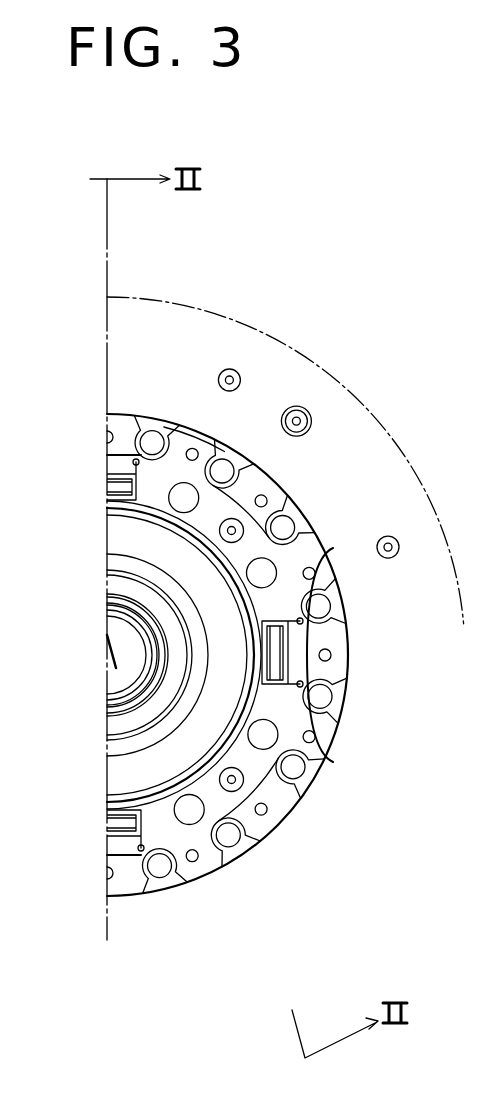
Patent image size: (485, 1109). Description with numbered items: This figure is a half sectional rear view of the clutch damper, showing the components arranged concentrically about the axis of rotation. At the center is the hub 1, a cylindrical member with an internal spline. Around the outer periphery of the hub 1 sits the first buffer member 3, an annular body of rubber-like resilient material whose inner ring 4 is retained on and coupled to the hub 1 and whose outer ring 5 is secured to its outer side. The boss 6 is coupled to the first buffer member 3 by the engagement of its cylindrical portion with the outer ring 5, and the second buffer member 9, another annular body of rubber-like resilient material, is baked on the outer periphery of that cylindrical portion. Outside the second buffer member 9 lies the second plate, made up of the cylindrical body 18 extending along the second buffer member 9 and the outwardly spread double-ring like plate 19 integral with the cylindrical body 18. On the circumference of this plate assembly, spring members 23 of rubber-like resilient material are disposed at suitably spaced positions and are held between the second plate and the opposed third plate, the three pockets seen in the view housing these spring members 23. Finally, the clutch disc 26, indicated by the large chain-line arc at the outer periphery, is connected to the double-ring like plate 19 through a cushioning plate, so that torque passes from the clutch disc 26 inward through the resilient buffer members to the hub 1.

The hub 1 is at (130, 690).
The first buffer member 3 is at (120, 586).
The inner ring 4 is at (120, 610).
The outer ring 5 is at (112, 573).
The boss 6 is at (112, 562).
The second buffer member 9 is at (124, 773).
The cylindrical body 18 is at (122, 798).
The double-ring like plate 19 is at (116, 846).
The spring member 23 is at (115, 486).
The clutch disc 26 is at (338, 438).